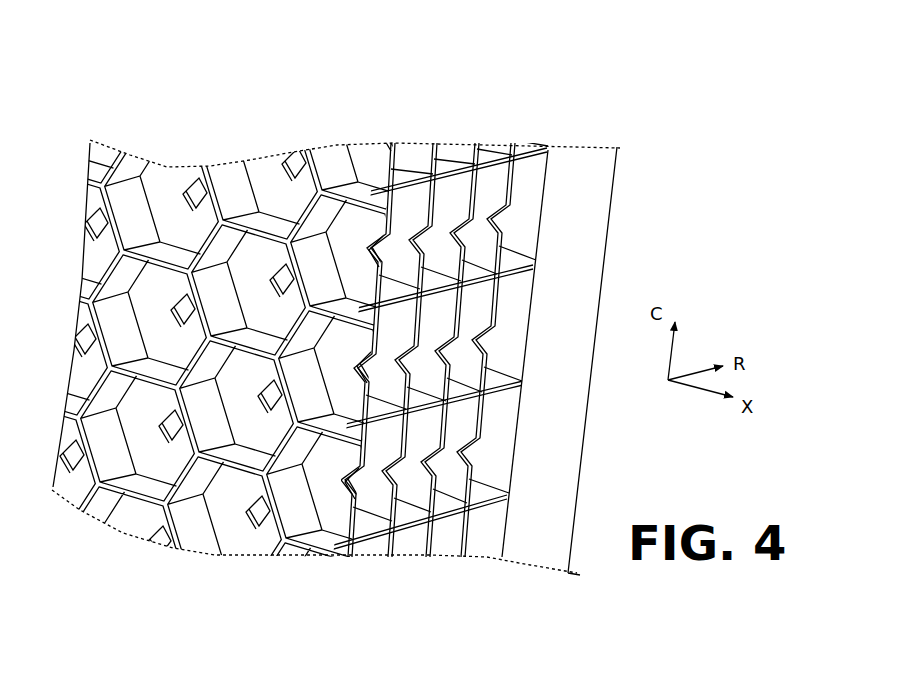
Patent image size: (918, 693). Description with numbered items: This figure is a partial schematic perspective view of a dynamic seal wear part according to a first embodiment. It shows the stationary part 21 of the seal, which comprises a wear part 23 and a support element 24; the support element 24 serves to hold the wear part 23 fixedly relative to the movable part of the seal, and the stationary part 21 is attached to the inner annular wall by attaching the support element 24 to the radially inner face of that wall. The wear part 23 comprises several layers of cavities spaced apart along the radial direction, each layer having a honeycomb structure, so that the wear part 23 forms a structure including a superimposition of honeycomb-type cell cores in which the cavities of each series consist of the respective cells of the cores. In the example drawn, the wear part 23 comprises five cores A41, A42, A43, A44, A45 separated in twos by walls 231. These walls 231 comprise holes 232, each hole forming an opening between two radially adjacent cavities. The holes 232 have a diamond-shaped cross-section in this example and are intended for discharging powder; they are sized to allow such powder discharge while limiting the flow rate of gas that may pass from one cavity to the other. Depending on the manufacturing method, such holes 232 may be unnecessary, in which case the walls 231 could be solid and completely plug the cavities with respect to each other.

The stationary part 21 is at (688, 55).
The wear part 23 is at (525, 120).
The support element 24 is at (588, 192).
The walls 231 is at (530, 175).
The holes 232 is at (170, 431).
The core A41 is at (295, 556).
The core A42 is at (375, 554).
The core A43 is at (403, 554).
The core A44 is at (438, 554).
The core A45 is at (483, 538).